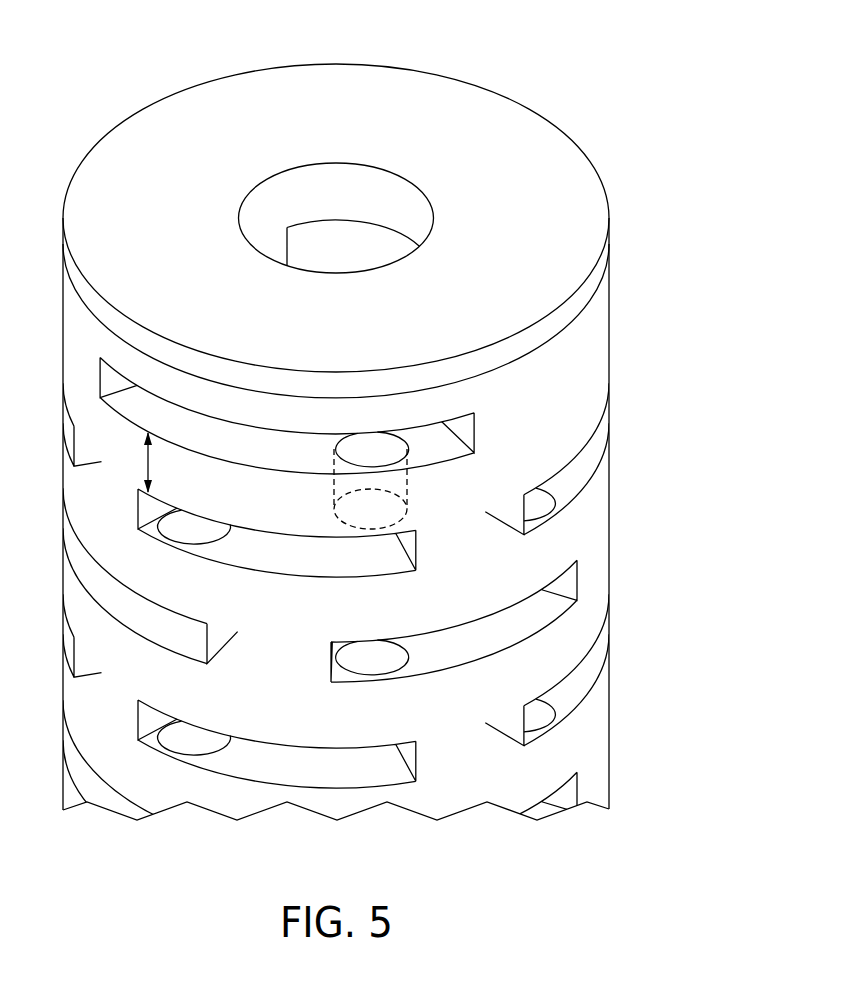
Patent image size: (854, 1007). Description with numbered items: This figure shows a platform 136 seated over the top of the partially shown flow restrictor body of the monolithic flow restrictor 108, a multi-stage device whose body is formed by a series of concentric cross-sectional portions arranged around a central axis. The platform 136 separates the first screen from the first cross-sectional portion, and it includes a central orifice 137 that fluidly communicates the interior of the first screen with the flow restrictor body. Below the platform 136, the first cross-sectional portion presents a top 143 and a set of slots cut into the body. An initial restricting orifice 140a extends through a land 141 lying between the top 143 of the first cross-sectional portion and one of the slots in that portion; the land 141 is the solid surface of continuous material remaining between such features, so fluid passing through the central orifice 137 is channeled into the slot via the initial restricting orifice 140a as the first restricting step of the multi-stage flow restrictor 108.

The monolithic flow restrictor 108 is at (640, 488).
The platform 136 is at (470, 98).
The central orifice 137 is at (366, 179).
The initial restricting orifice 140a is at (407, 494).
The land 141 is at (148, 466).
The top of the first cross-sectional portion 143 is at (294, 462).